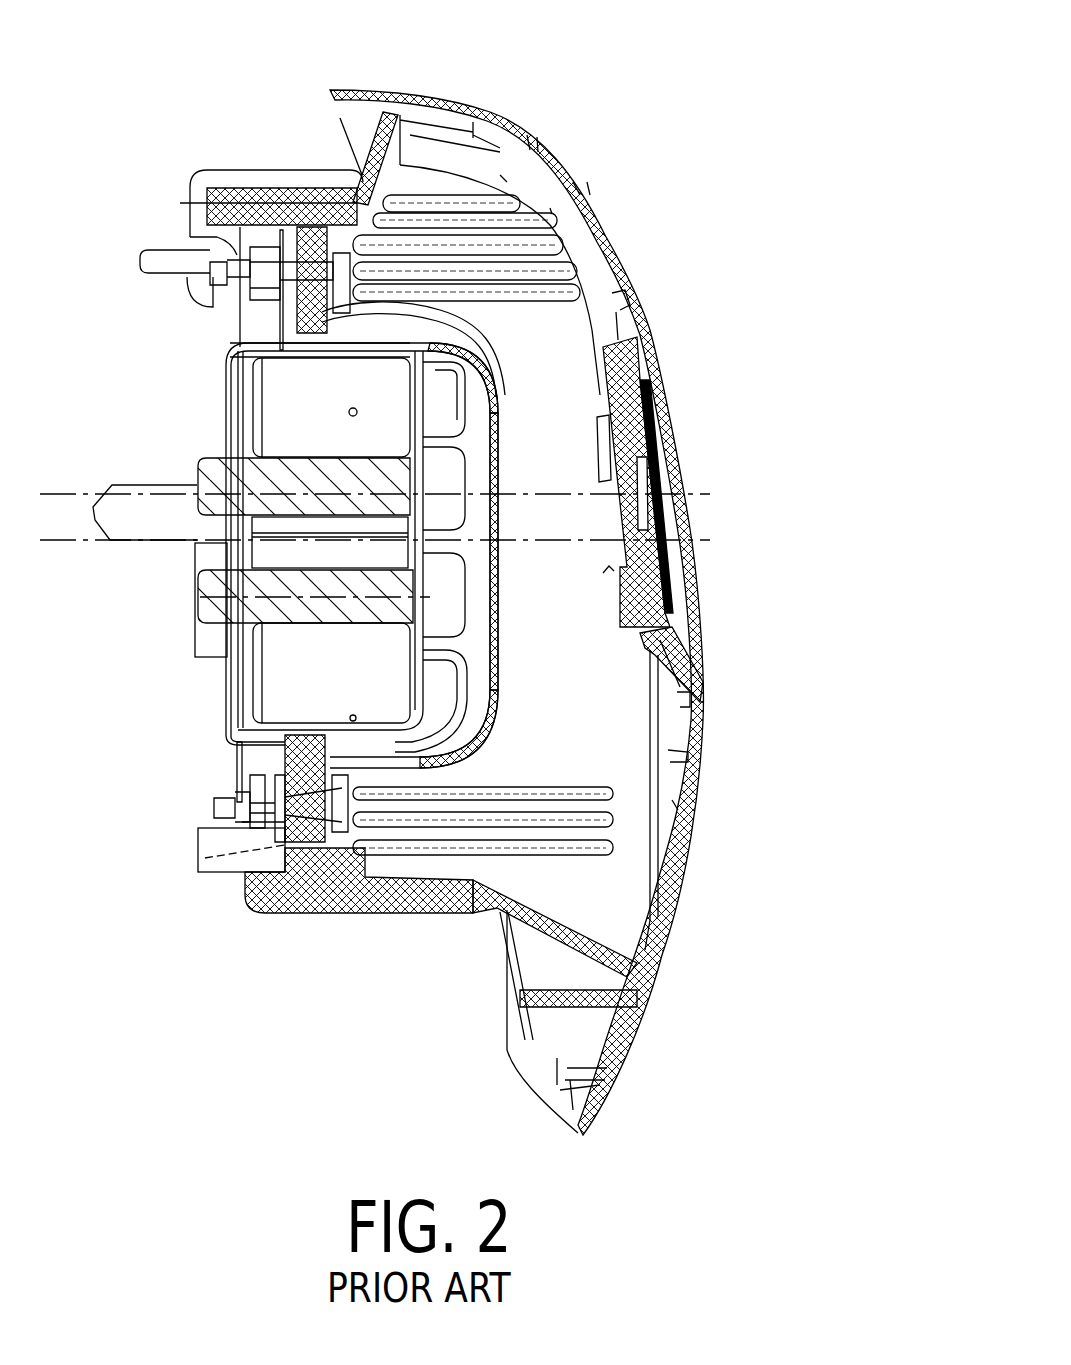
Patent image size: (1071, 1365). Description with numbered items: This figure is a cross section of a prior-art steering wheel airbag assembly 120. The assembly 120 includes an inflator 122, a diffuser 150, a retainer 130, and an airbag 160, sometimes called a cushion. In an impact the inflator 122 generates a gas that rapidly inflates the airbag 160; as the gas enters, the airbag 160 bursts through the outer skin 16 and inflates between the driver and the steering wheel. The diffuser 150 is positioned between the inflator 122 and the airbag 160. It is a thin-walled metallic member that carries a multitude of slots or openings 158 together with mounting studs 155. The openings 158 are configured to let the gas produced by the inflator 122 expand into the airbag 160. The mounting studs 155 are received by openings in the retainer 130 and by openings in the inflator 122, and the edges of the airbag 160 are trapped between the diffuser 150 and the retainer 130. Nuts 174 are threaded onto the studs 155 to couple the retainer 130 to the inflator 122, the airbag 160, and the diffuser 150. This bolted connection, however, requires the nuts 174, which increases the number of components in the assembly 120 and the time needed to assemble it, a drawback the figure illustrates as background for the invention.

The steering wheel airbag assembly 120 is at (625, 90).
The outer skin 16 is at (637, 288).
The inflator 122 is at (237, 448).
The retainer 130 is at (290, 900).
The diffuser 150 is at (469, 635).
The mounting studs 155 is at (205, 302).
The openings 158 is at (443, 400).
The airbag 160 is at (500, 298).
The nuts 174 is at (263, 262).